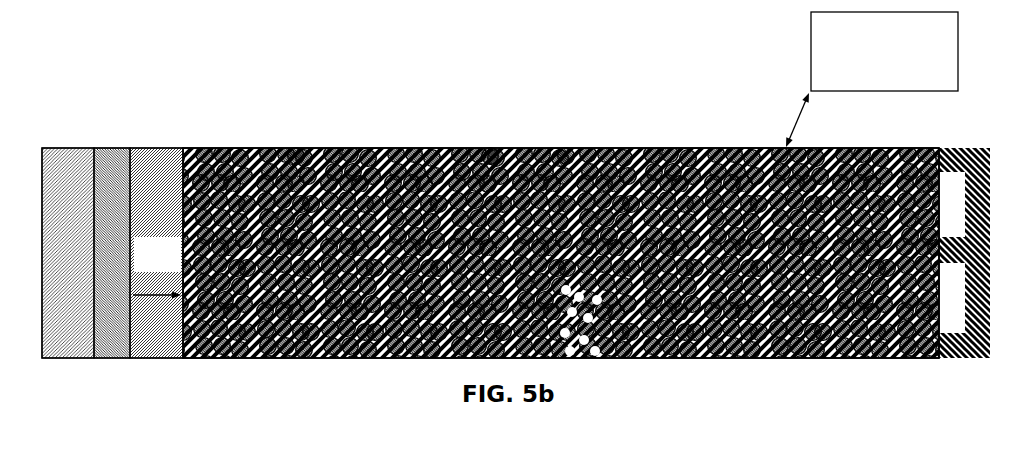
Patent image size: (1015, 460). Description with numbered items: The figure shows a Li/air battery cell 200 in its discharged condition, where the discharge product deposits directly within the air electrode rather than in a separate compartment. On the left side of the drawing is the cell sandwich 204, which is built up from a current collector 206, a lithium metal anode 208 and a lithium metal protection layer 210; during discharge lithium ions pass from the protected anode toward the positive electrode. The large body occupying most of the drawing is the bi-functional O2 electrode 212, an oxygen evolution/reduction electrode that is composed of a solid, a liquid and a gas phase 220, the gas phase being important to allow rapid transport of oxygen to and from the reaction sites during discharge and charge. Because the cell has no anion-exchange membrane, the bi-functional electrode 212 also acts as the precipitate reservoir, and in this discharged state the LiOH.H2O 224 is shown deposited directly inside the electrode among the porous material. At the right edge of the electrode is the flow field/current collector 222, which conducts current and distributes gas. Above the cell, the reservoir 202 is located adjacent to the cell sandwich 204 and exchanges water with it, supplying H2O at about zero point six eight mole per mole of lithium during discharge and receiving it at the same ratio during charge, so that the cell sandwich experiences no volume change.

The battery cell 200 is at (381, 80).
The reservoir 202 is at (811, 13).
The cell sandwich 204 is at (228, 100).
The current collector 206 is at (75, 148).
The lithium metal anode 208 is at (121, 148).
The lithium metal protection layer 210 is at (173, 148).
The bi-functional O2 electrode 212 is at (490, 149).
The gas phase 220 is at (295, 149).
The flow field/current collector 222 is at (985, 148).
The LiOH.H2O 224 is at (566, 149).